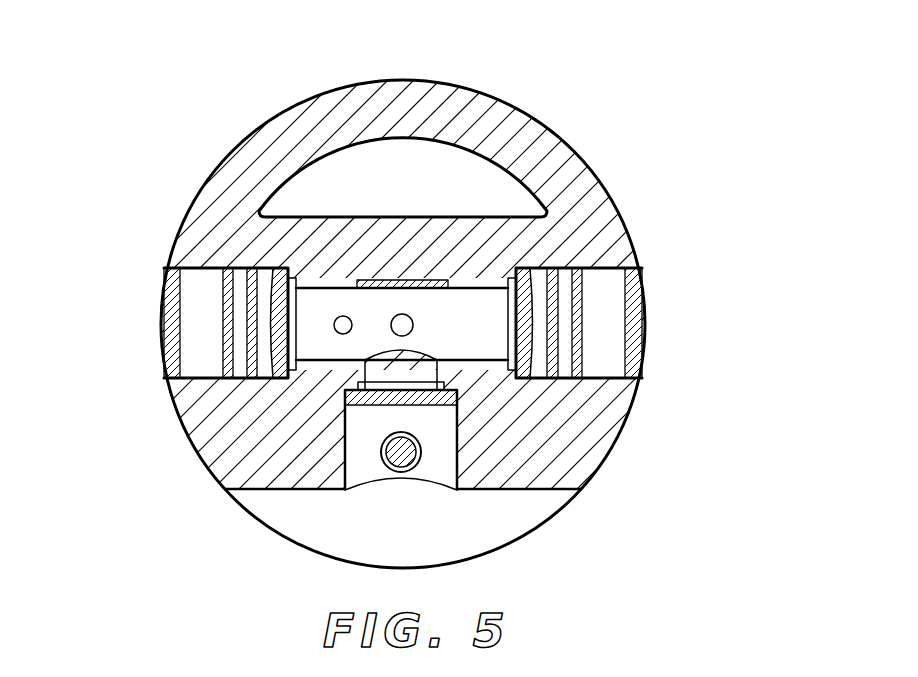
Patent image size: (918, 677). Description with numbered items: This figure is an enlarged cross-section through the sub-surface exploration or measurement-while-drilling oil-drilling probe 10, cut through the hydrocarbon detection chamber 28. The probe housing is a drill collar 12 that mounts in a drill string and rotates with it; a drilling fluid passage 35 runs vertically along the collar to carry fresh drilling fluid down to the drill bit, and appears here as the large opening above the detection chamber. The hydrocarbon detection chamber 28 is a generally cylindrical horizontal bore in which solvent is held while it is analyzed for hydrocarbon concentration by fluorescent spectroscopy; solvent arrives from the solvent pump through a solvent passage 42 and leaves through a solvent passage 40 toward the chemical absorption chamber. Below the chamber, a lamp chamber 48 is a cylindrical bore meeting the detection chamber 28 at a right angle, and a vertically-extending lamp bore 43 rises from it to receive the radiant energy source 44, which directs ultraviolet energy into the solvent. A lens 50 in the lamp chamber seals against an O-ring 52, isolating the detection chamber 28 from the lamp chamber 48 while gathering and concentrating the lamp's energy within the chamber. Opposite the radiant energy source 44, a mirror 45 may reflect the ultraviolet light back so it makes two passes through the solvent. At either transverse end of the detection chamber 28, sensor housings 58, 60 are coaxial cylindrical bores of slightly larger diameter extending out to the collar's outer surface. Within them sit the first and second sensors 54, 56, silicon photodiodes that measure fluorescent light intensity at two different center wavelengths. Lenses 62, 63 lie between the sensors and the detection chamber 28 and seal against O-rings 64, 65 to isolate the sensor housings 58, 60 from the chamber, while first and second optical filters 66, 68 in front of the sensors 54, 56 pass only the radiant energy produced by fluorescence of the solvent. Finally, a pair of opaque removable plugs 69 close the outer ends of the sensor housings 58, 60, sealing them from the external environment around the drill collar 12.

The oil-drilling probe 10 is at (483, 93).
The drill collar 12 is at (587, 482).
The hydrocarbon detection chamber 28 is at (348, 297).
The drilling fluid passage 35 is at (432, 178).
The solvent passage 40 is at (345, 332).
The solvent passage 42 is at (402, 314).
The lamp bore 43 is at (390, 468).
The radiant energy source 44 is at (407, 465).
The mirror 45 is at (430, 280).
The lamp chamber 48 is at (357, 472).
The lens 50 is at (417, 390).
The O-ring 52 is at (346, 385).
The first sensor 54 is at (224, 266).
The second sensor 56 is at (583, 268).
The sensor housing 58 is at (193, 298).
The sensor housing 60 is at (617, 313).
The lens 62 is at (278, 285).
The lens 63 is at (525, 295).
The O-ring 64 is at (296, 288).
The O-ring 65 is at (510, 299).
The first optical filter 66 is at (248, 266).
The second optical filter 68 is at (558, 268).
The opaque removable plugs 69 is at (170, 337).